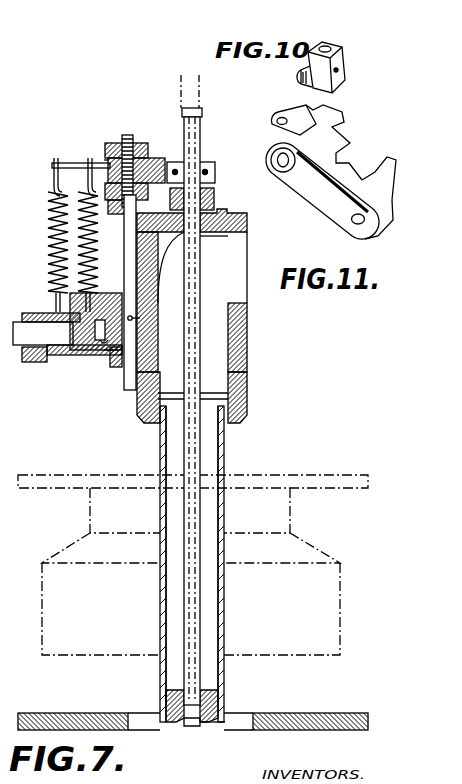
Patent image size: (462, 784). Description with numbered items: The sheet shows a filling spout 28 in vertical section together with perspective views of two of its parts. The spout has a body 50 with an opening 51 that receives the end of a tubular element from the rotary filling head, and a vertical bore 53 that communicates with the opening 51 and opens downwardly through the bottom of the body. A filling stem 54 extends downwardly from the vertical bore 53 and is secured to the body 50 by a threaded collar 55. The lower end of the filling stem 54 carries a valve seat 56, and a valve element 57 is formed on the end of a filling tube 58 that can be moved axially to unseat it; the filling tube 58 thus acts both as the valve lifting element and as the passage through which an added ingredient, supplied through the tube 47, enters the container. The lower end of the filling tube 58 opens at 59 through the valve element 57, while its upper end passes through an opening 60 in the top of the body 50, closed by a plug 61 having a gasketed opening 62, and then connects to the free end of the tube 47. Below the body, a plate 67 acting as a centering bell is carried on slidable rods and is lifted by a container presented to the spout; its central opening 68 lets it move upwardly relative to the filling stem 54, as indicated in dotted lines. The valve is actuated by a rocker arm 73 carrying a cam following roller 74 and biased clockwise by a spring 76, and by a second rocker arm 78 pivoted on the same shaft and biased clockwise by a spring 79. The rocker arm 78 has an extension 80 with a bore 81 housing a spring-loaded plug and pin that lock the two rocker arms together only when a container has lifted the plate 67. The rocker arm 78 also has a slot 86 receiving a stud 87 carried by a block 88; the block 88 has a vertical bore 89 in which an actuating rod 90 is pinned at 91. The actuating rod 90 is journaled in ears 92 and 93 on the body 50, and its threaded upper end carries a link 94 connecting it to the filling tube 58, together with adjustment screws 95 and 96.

In FIG. 7, the filling spout 28 is at (236, 214).
In FIG. 7, the tube 47 is at (180, 74).
In FIG. 7, the body 50 is at (247, 338).
In FIG. 7, the opening 51 is at (248, 226).
In FIG. 7, the vertical bore 53 is at (244, 360).
In FIG. 7, the filling stem 54 is at (226, 442).
In FIG. 7, the threaded collar 55 is at (248, 390).
In FIG. 7, the valve seat 56 is at (212, 730).
In FIG. 7, the valve element 57 is at (218, 692).
In FIG. 7, the filling tube 58 is at (204, 262).
In FIG. 7, the opening 59 is at (193, 727).
In FIG. 7, the opening 60 is at (204, 236).
In FIG. 7, the plug 61 is at (218, 176).
In FIG. 7, the gasketed opening 62 is at (216, 200).
In FIG. 7, the plate 67 is at (311, 466).
In FIG. 7, the opening 68 is at (146, 718).
In FIG. 7, the rocker arm 73 is at (46, 316).
In FIG. 7, the cam following roller 74 is at (34, 364).
In FIG. 7, the spring 76 is at (50, 243).
In FIG. 7, the second rocker arm 78 is at (96, 352).
In FIG. 11, the second rocker arm 78 is at (325, 200).
In FIG. 7, the spring 79 is at (54, 182).
In FIG. 11, the extension 80 is at (370, 170).
In FIG. 11, the bore 81 is at (358, 228).
In FIG. 7, the slot 86 is at (108, 358).
In FIG. 11, the slot 86 is at (352, 157).
In FIG. 7, the stud 87 is at (102, 354).
In FIG. 10, the stud 87 is at (300, 80).
In FIG. 7, the block 88 is at (134, 318).
In FIG. 10, the block 88 is at (345, 62).
In FIG. 10, the vertical bore 89 is at (333, 42).
In FIG. 7, the actuating rod 90 is at (128, 392).
In FIG. 7, the pin 91 is at (138, 322).
In FIG. 7, the ear 92 is at (80, 214).
In FIG. 7, the ear 93 is at (114, 362).
In FIG. 7, the link 94 is at (150, 148).
In FIG. 7, the adjustment screw 95 is at (122, 138).
In FIG. 7, the adjustment screw 96 is at (104, 160).